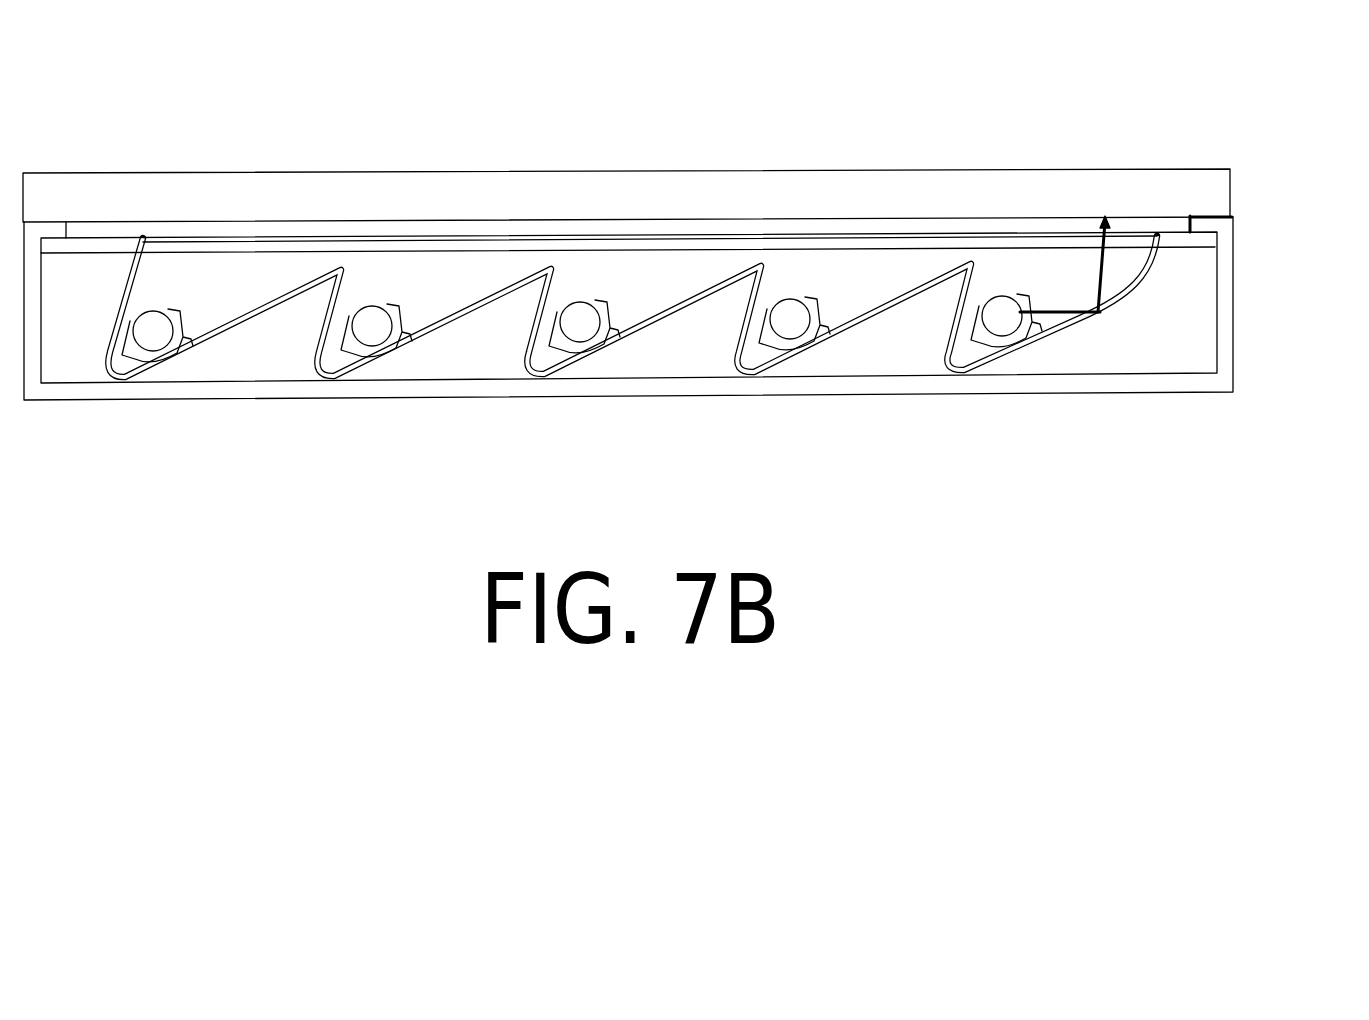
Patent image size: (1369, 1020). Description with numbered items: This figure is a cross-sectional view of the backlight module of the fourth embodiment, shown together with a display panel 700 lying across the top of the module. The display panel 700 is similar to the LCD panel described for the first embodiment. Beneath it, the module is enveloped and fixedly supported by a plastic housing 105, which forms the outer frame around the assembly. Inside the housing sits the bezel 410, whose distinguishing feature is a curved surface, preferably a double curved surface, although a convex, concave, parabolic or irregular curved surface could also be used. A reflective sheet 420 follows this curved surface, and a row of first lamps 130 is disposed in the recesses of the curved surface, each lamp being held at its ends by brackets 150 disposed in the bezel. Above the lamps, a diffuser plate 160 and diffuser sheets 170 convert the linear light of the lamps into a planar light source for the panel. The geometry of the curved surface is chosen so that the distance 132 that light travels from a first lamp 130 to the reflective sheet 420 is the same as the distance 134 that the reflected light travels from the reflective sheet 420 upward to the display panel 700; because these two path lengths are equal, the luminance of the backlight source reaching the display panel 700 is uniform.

The display panel 700 is at (212, 172).
The plastic housing 105 is at (1233, 383).
The first lamp 130 is at (992, 303).
The distance 132 is at (1055, 314).
The distance 134 is at (1115, 260).
The bracket 150 is at (978, 350).
The diffuser plate 160 is at (1117, 247).
The diffuser sheet 170 is at (1040, 232).
The bezel 410 is at (1183, 218).
The reflective sheet 420 is at (1103, 318).